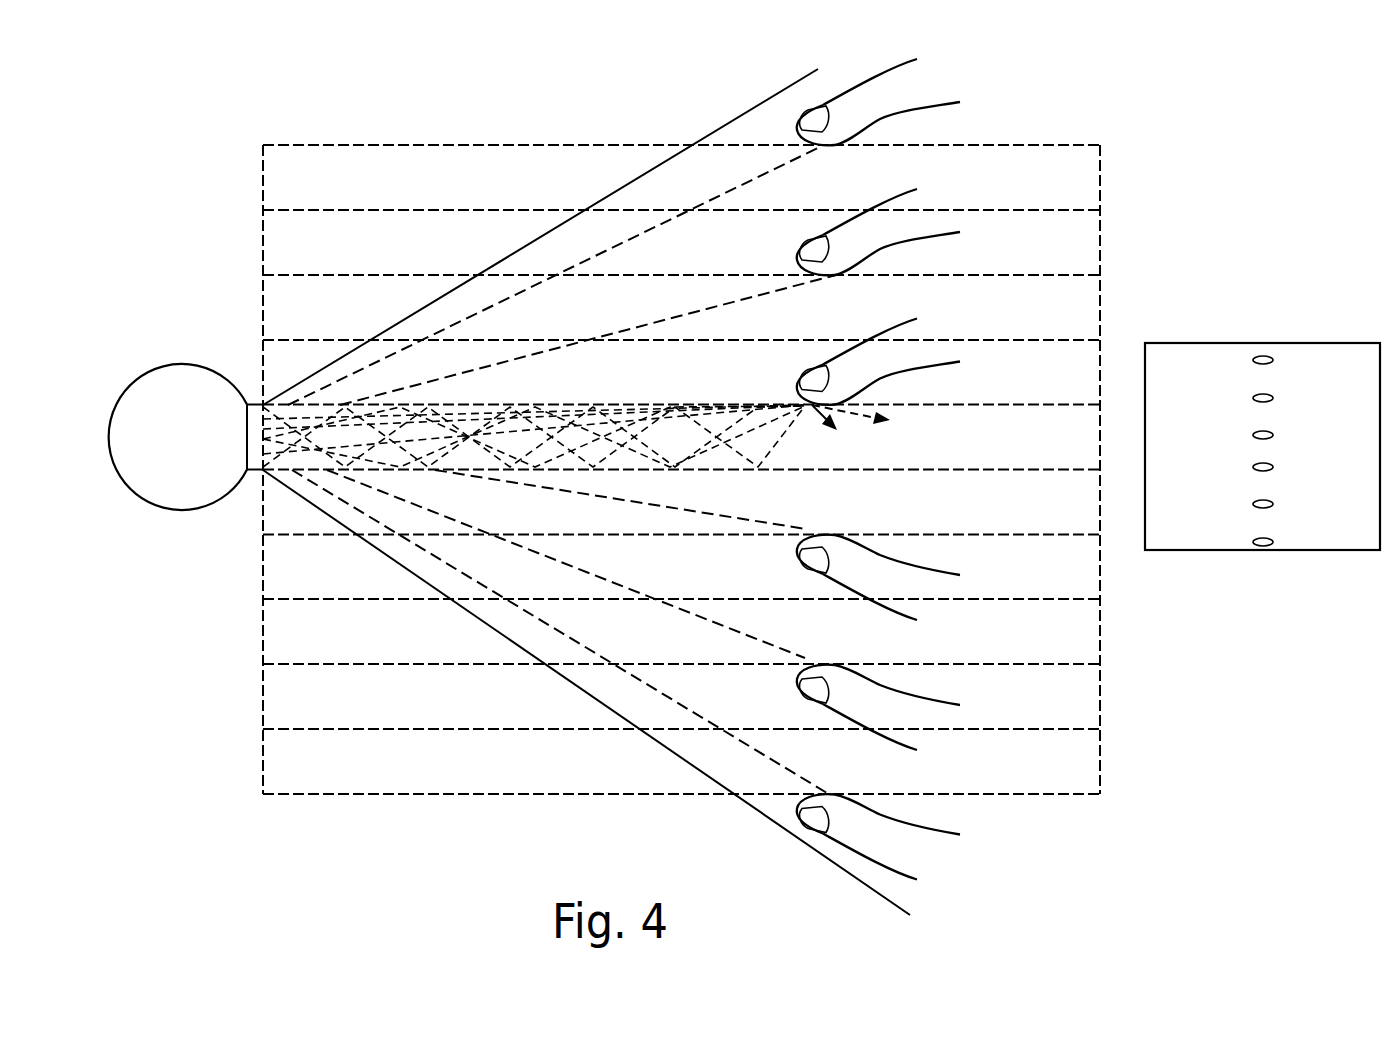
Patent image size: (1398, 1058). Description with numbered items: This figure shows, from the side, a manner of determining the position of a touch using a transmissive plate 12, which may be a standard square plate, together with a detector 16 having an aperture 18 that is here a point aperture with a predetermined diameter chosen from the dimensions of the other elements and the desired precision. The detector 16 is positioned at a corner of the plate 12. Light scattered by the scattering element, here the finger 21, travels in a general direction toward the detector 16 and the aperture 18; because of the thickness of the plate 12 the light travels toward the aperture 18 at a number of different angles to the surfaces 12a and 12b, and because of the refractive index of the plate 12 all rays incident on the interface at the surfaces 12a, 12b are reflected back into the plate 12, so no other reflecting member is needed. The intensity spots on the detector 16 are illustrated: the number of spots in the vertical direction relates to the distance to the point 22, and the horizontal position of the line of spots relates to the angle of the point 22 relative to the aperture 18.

The transmissive plate 12 is at (1068, 435).
The surface of the plate 12a is at (1069, 405).
The surface of the plate 12b is at (1066, 468).
The detector 16 is at (207, 451).
The aperture 18 is at (257, 404).
The finger 21 is at (930, 362).
The point 22 is at (818, 422).